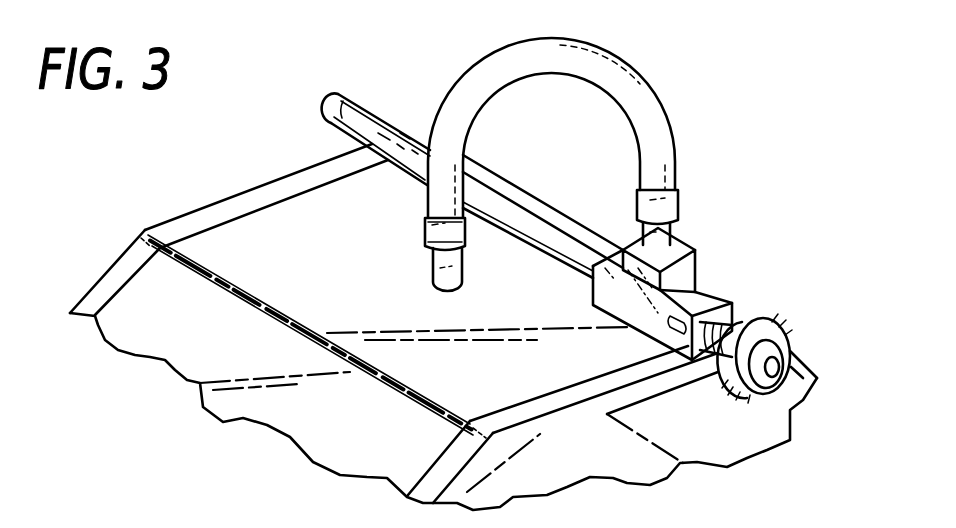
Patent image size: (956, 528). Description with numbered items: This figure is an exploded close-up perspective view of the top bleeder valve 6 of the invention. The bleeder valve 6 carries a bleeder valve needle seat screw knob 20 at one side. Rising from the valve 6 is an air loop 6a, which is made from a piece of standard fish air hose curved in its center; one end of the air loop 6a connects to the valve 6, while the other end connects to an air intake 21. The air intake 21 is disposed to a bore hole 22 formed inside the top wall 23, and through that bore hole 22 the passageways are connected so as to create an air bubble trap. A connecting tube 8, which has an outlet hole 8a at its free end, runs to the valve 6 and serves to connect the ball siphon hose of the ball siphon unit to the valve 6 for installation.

The top bleeder valve 6 is at (704, 245).
The air loop 6a is at (648, 95).
The connecting tube 8 is at (368, 118).
The outlet hole 8a is at (324, 107).
The bleeder valve needle seat screw knob 20 is at (777, 320).
The air intake 21 is at (464, 266).
The bore hole 22 is at (440, 272).
The top wall 23 is at (292, 268).